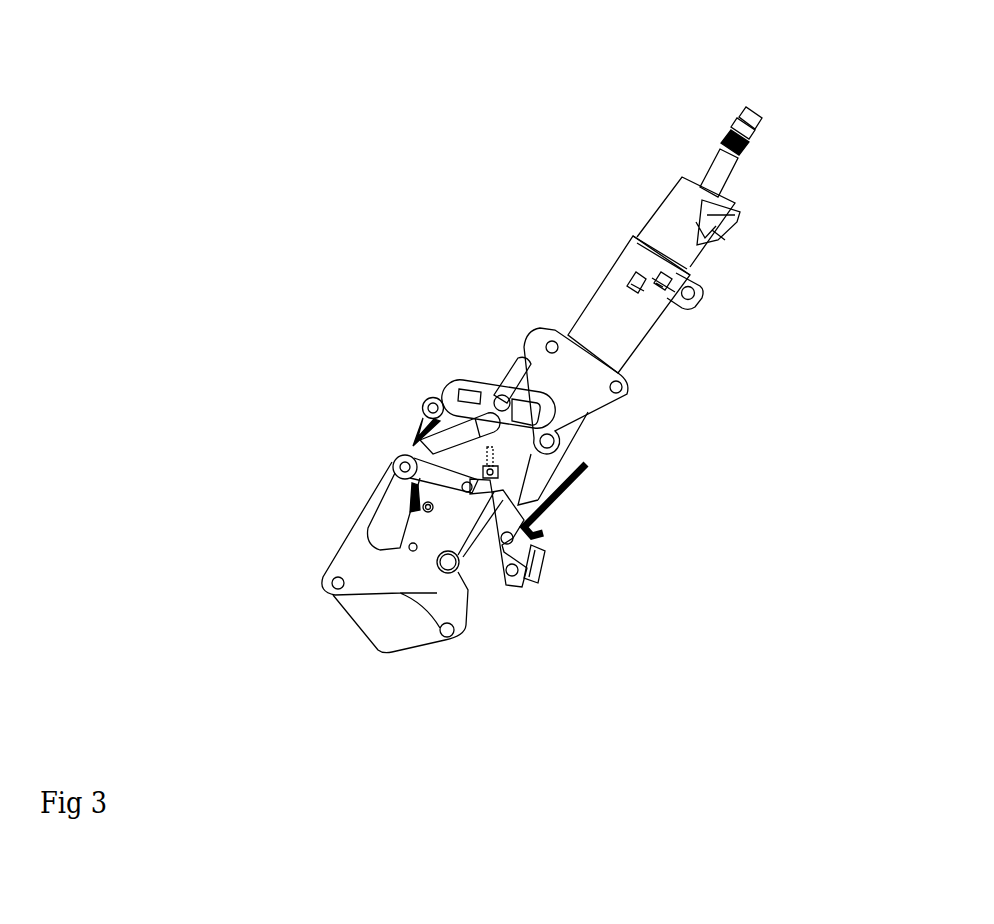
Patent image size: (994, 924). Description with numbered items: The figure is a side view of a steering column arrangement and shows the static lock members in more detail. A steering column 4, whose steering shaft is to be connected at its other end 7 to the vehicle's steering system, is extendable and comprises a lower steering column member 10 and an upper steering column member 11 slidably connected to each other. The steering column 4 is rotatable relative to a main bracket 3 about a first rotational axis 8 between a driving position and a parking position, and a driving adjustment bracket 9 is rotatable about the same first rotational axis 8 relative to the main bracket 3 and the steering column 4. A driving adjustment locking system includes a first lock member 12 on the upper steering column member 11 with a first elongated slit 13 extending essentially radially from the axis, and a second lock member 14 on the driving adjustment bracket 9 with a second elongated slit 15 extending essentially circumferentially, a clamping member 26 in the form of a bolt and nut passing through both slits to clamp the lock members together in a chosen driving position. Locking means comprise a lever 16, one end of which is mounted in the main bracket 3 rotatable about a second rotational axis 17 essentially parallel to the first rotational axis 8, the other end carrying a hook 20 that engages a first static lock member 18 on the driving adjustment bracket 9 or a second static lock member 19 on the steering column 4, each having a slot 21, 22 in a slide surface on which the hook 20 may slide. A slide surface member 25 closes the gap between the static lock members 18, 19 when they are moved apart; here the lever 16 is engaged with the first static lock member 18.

The main bracket 3 is at (385, 503).
The steering column 4 is at (663, 288).
The other end 7 is at (437, 653).
The first rotational axis 8 is at (439, 564).
The driving adjustment bracket 9 is at (413, 446).
The lower steering column member 10 is at (550, 558).
The upper steering column member 11 is at (625, 332).
The first lock member 12 is at (533, 340).
The first elongated slit 13 is at (525, 370).
The second lock member 14 is at (424, 396).
The second elongated slit 15 is at (478, 393).
The lever 16 is at (414, 447).
The second rotational axis 17 is at (397, 463).
The first static lock member 18 is at (453, 513).
The second static lock member 19 is at (493, 565).
The hook 20 is at (467, 488).
The slot 21 is at (452, 515).
The slot 22 is at (507, 512).
The slide surface member 25 is at (467, 533).
The clamping member 26 is at (500, 402).